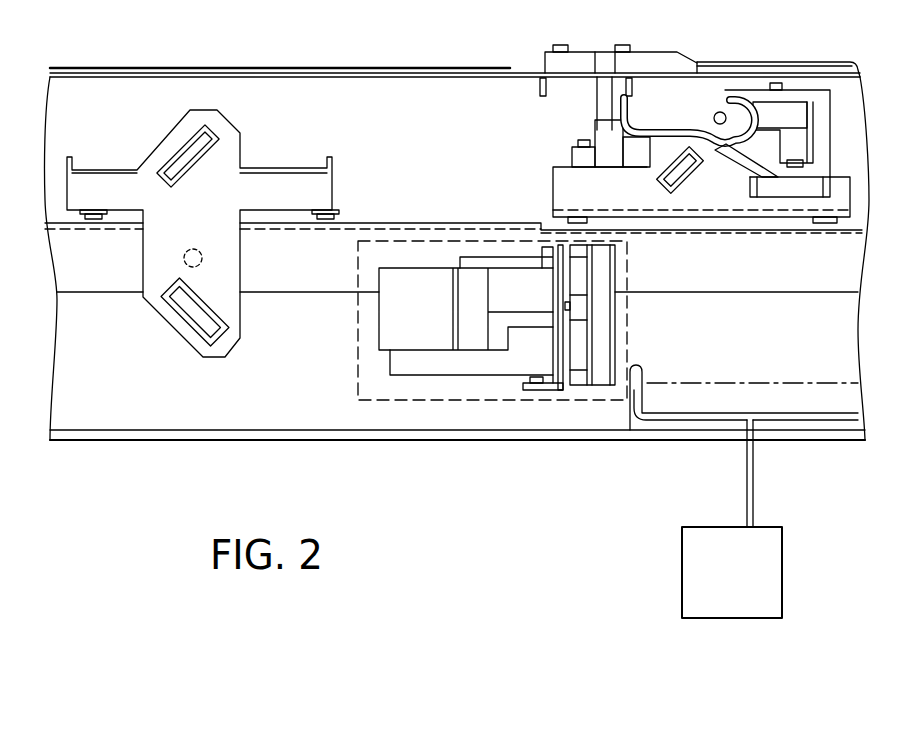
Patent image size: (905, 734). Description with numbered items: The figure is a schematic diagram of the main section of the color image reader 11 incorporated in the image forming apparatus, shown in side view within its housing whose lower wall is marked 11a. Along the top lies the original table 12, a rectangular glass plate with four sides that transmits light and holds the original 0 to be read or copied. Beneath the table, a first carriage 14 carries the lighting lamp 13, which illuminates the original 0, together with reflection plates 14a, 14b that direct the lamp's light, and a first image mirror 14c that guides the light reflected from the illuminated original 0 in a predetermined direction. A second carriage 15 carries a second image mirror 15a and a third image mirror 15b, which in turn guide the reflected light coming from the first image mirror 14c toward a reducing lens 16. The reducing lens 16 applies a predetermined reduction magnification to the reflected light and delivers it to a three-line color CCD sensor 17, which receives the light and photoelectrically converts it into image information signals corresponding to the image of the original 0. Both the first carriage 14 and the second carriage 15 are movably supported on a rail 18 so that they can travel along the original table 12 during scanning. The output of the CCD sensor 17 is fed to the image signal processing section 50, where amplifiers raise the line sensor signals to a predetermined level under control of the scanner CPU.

The color image reader 11 is at (423, 68).
The bottom wall of housing 11a is at (150, 440).
The original table 12 is at (823, 77).
The lighting lamp 13 is at (710, 112).
The apparatus 0 is at (787, 62).
The first carriage 14 is at (842, 182).
The reflection plate 14a is at (717, 160).
The reflection plate 14b is at (640, 130).
The first image mirror 14c is at (658, 180).
The second carriage 15 is at (232, 145).
The second image mirror 15a is at (187, 158).
The third image mirror 15b is at (197, 312).
The reducing lens 16 is at (389, 328).
The 3-line color CCD sensor 17 is at (602, 378).
The rail 18 is at (97, 281).
The image signal processing section 50 is at (682, 567).